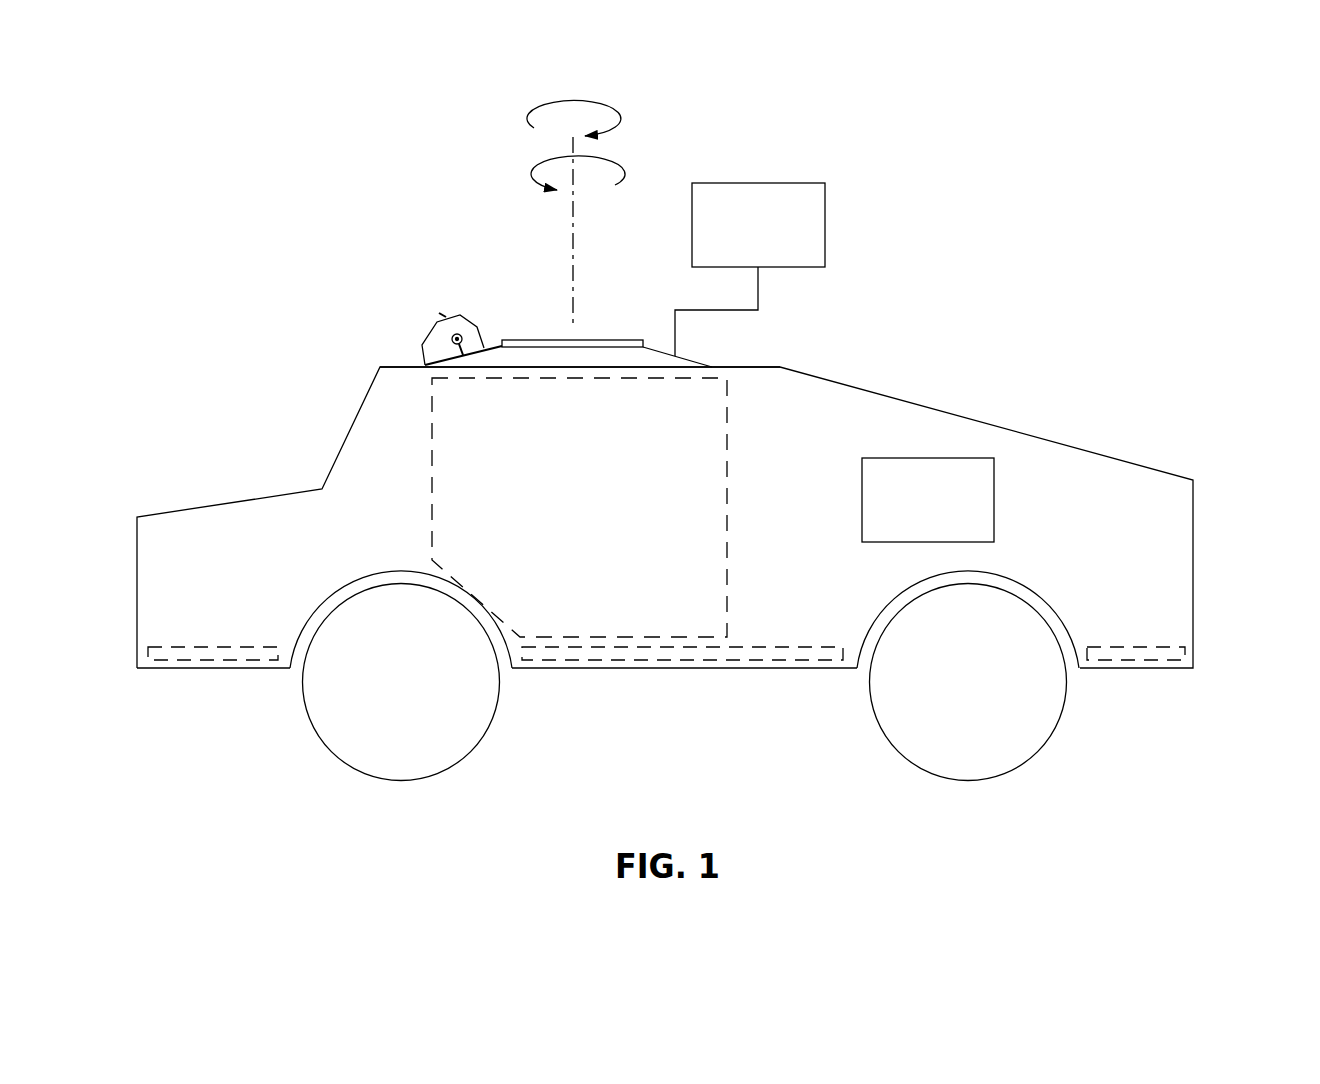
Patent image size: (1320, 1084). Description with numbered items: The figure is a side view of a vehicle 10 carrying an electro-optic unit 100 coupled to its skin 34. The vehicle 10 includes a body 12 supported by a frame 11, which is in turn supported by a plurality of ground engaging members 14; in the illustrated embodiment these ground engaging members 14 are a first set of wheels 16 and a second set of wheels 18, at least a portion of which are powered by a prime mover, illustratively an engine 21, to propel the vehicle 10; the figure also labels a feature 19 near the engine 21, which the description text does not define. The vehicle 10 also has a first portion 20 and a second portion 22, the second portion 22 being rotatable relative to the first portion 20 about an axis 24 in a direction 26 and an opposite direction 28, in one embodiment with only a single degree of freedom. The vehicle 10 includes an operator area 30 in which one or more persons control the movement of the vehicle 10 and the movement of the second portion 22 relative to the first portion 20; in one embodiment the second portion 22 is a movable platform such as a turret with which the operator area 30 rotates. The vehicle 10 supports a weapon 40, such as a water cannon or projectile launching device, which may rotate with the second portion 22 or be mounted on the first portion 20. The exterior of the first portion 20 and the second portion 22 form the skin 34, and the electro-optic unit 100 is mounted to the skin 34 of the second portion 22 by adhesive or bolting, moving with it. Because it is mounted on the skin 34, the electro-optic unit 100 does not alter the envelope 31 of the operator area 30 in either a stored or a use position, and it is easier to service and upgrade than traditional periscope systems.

The vehicle 10 is at (1114, 225).
The frame 11 is at (203, 660).
The body 12 is at (1188, 467).
The ground engaging members 14 is at (1152, 747).
The first set of wheels 16 is at (393, 758).
The second set of wheels 18 is at (987, 748).
The engine compartment 19 is at (1002, 475).
The first portion 20 is at (928, 393).
The engine 21 is at (994, 503).
The second portion 22 is at (694, 351).
The axis 24 is at (573, 242).
The direction 26 is at (620, 170).
The direction 28 is at (530, 113).
The operator area 30 is at (730, 418).
The envelope 31 is at (727, 543).
The skin 34 is at (521, 350).
The weapon 40 is at (825, 222).
The electro-optic unit 100 is at (433, 315).